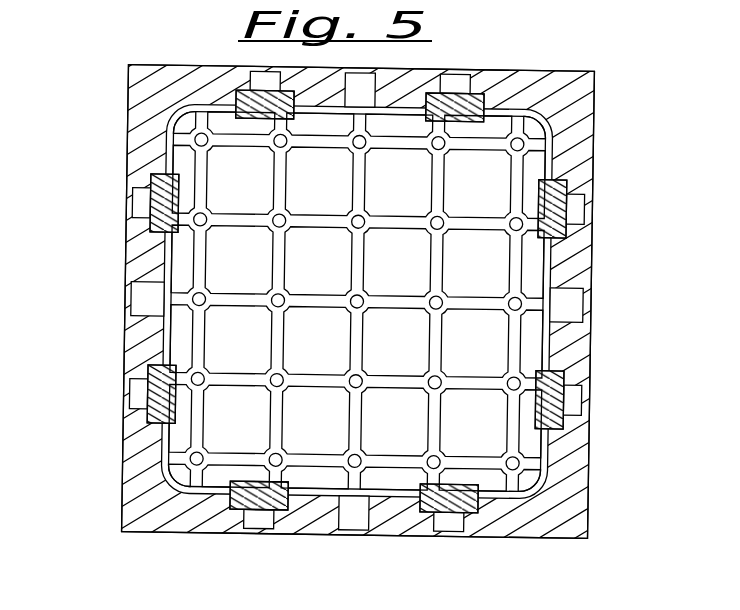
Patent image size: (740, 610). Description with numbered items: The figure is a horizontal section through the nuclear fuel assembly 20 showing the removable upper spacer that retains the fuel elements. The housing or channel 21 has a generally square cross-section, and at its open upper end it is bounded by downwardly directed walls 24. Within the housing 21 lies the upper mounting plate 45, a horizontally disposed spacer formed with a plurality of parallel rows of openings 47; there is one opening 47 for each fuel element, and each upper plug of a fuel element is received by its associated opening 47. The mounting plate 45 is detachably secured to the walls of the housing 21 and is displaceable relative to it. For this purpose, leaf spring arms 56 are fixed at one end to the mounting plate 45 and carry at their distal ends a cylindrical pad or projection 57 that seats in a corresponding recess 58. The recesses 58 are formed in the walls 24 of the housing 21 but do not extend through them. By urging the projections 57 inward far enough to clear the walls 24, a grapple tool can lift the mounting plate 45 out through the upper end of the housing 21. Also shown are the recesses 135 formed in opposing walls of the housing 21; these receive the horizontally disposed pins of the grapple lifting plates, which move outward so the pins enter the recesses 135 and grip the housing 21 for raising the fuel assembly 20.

The nuclear fuel assembly 20 is at (118, 124).
The housing 21 is at (589, 502).
The downwardly directed walls 24 is at (584, 71).
The upper mounting plate 45 is at (350, 263).
The openings 47 is at (204, 227).
The leaf spring arms 56 is at (181, 180).
The cylindrical pad or projection 57 is at (260, 98).
The recesses 58 is at (276, 86).
The recesses 135 is at (351, 78).